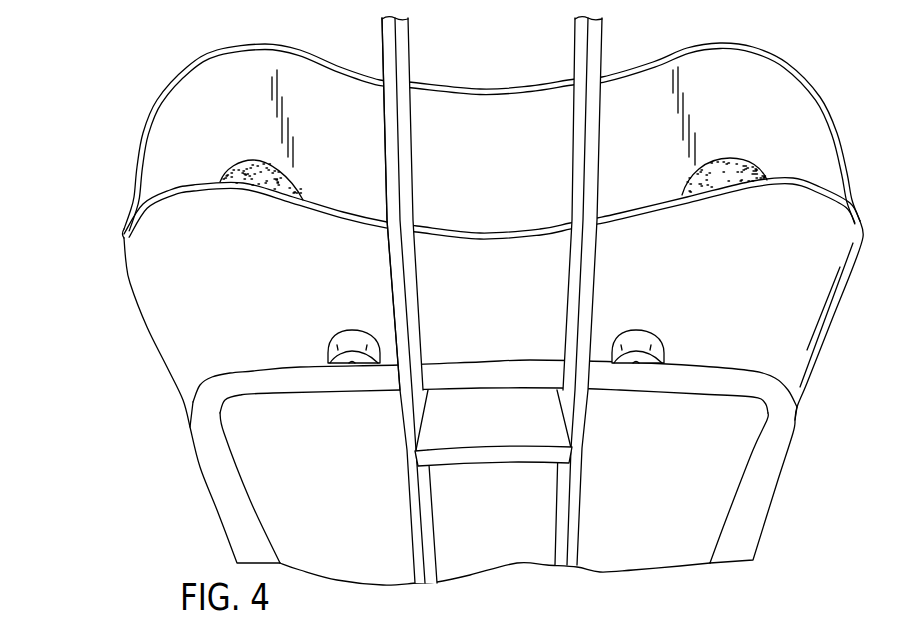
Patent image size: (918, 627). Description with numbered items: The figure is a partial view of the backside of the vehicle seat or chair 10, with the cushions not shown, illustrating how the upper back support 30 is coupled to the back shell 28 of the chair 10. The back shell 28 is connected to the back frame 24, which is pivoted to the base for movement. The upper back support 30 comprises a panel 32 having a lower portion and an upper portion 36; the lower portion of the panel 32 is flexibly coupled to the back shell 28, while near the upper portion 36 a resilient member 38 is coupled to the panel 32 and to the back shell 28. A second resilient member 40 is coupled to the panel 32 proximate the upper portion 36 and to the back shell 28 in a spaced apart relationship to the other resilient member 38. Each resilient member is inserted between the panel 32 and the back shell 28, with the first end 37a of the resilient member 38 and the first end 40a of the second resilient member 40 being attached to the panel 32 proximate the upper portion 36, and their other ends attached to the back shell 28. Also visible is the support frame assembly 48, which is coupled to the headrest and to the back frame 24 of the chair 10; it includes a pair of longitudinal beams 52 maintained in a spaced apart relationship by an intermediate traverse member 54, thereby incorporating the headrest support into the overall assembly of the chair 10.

The chair 10 is at (634, 46).
The back frame 24 is at (763, 480).
The back shell 28 is at (797, 313).
The upper back support 30 is at (244, 48).
The panel 32 is at (500, 156).
The upper portion 36 is at (748, 77).
The first end 37a is at (292, 180).
The resilient member 38 is at (250, 163).
The second resilient member 40 is at (747, 170).
The first end 40a is at (742, 158).
The support frame assembly 48 is at (388, 262).
The longitudinal beams 52 is at (392, 304).
The intermediate traverse member 54 is at (490, 456).